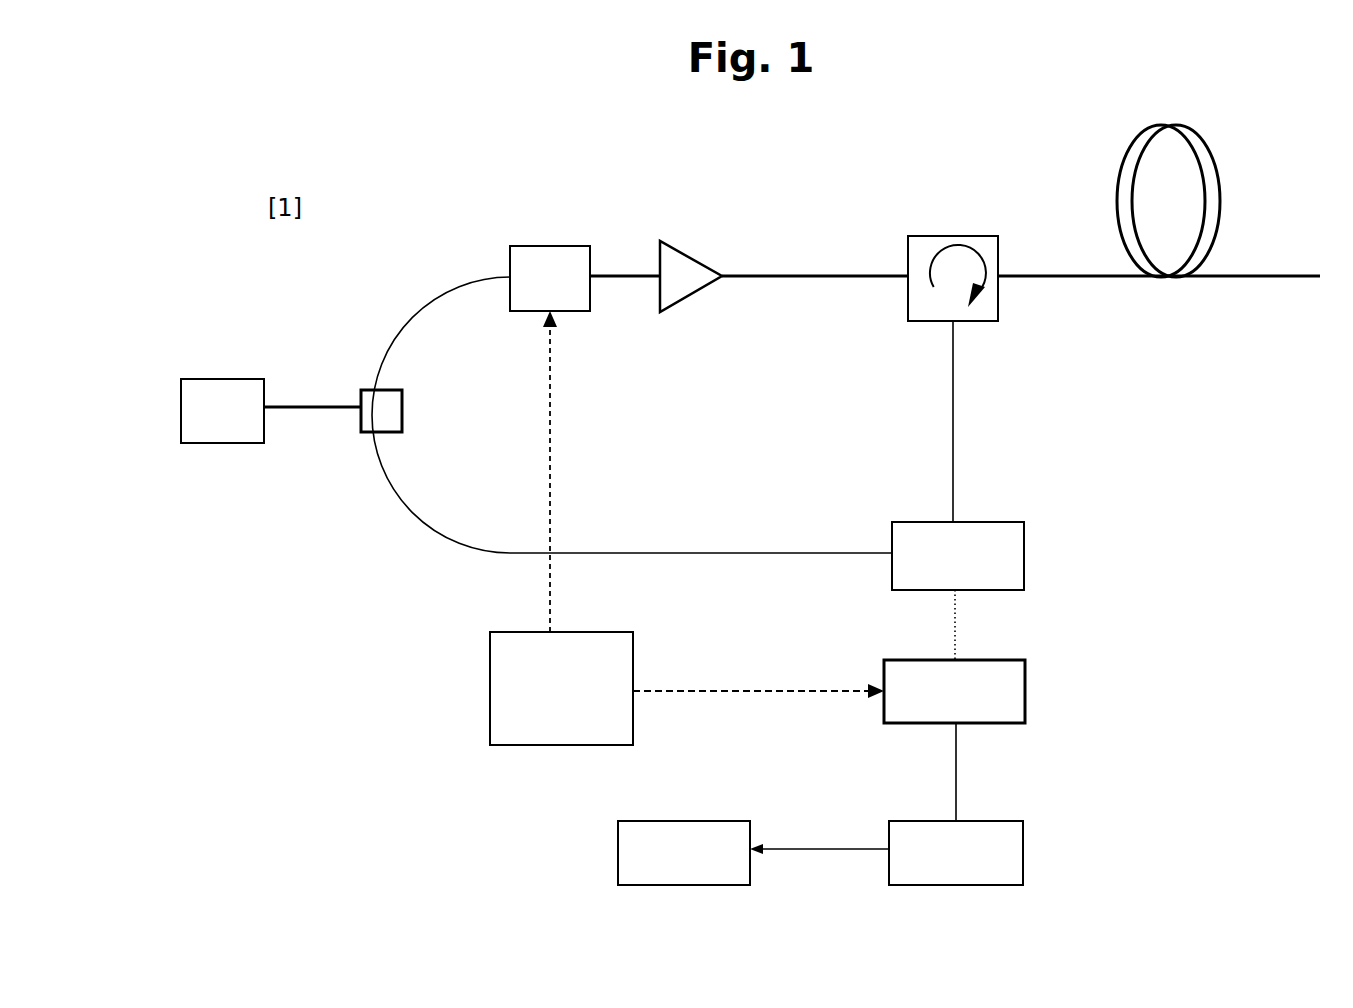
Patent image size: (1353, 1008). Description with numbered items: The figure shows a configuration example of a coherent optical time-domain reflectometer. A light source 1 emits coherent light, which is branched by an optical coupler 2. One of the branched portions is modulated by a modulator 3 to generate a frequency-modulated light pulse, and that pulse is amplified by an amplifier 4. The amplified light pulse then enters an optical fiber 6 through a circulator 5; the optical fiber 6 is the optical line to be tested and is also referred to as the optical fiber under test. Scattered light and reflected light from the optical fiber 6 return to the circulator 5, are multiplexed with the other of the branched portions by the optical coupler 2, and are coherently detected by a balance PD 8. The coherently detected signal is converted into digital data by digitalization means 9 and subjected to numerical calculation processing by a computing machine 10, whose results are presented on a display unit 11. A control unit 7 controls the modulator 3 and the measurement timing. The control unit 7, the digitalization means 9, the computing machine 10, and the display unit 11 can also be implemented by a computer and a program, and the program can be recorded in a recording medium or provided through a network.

The light source 1 is at (213, 376).
The optical coupler 2 is at (403, 407).
The modulator 3 is at (555, 246).
The amplifier 4 is at (690, 248).
The circulator 5 is at (955, 236).
The optical fiber 6 is at (1218, 174).
The control unit 7 is at (636, 666).
The balance PD 8 is at (990, 522).
The digitalization means 9 is at (978, 660).
The computing machine 10 is at (995, 821).
The display unit 11 is at (725, 821).